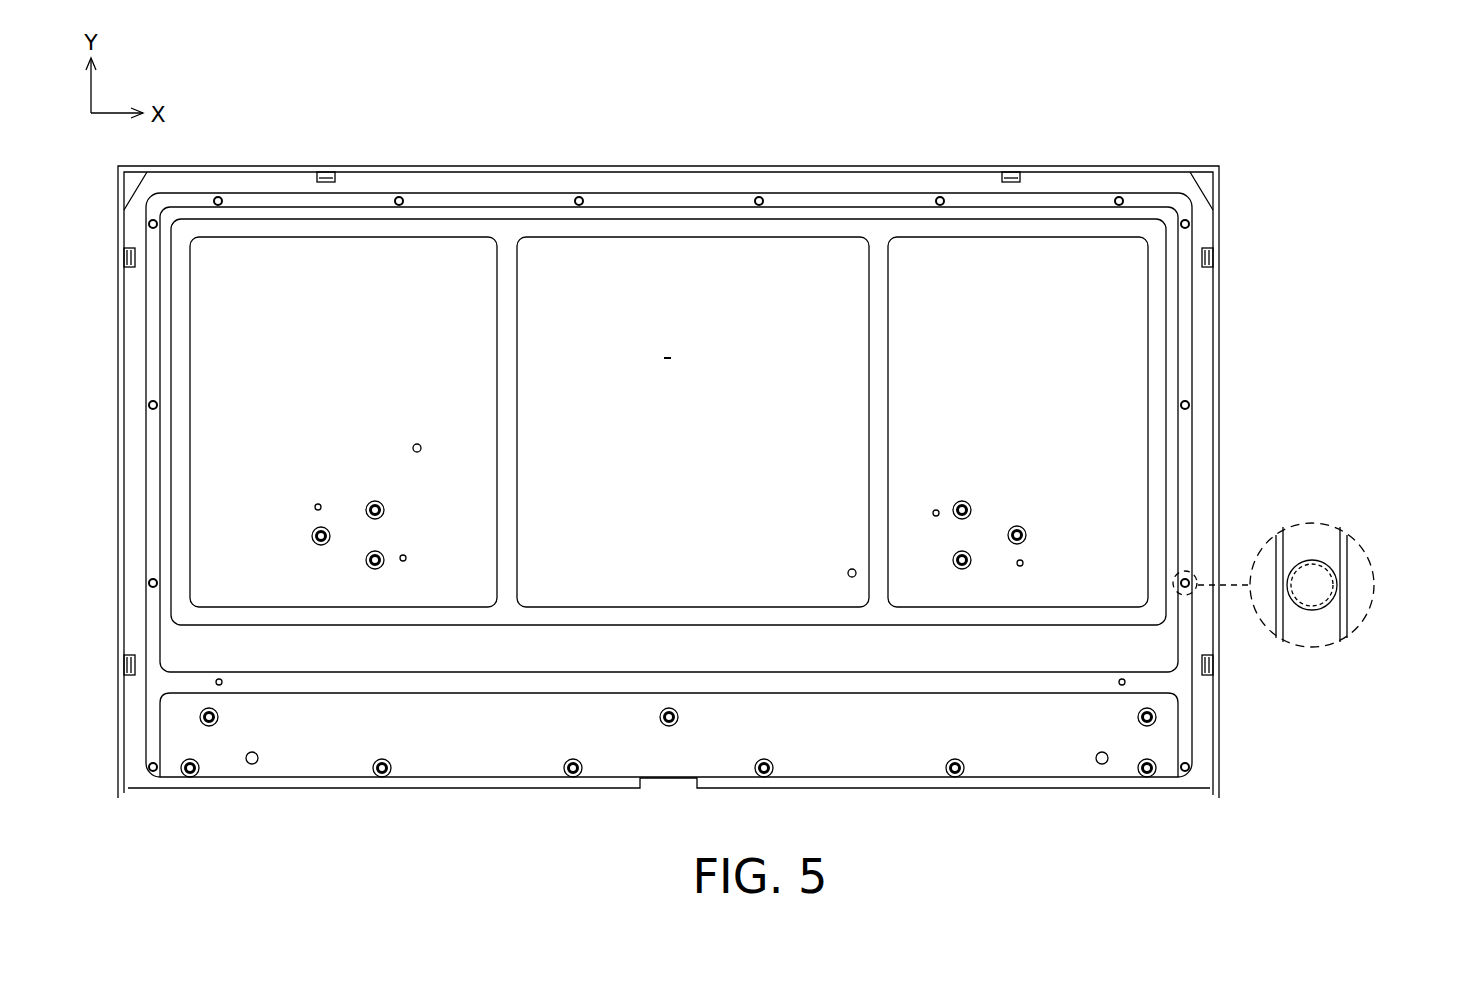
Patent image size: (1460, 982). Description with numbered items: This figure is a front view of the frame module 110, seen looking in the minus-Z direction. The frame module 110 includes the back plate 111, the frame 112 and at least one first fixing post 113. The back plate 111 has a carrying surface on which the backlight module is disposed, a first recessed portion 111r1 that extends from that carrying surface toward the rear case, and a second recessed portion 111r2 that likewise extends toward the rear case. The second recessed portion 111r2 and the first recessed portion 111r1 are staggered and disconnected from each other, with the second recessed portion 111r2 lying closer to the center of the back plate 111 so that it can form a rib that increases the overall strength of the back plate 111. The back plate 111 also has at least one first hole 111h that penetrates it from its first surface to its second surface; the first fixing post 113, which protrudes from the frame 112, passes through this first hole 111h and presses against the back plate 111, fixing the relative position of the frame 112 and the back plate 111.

The frame module 110 is at (592, 131).
The back plate 111 is at (1023, 770).
The first recessed portion 111r1 is at (1188, 716).
The second recessed portion 111r2 is at (1156, 471).
The first hole 111h is at (1318, 563).
The frame 112 is at (1219, 775).
The first fixing post 113 is at (1190, 404).